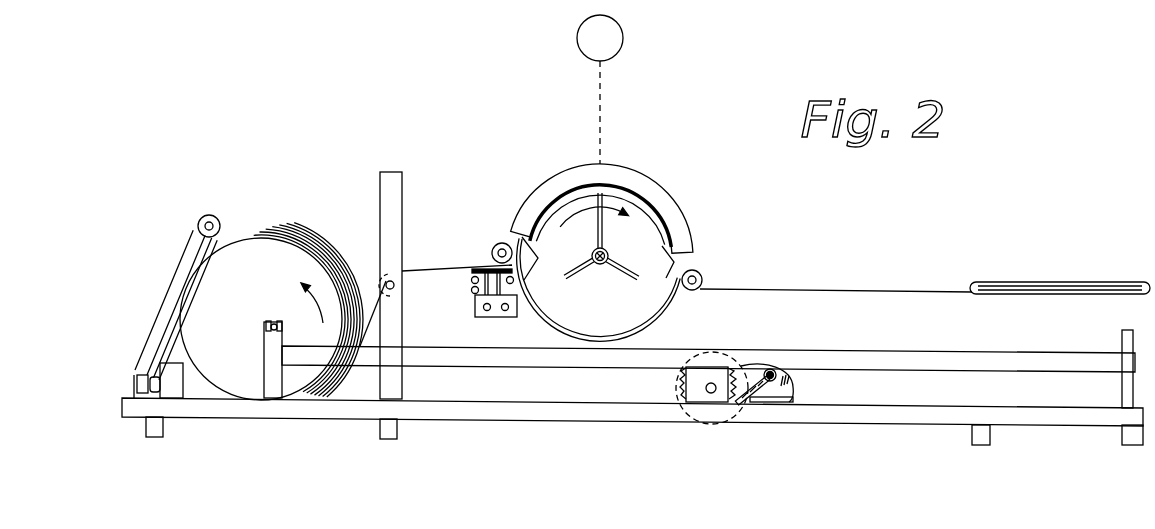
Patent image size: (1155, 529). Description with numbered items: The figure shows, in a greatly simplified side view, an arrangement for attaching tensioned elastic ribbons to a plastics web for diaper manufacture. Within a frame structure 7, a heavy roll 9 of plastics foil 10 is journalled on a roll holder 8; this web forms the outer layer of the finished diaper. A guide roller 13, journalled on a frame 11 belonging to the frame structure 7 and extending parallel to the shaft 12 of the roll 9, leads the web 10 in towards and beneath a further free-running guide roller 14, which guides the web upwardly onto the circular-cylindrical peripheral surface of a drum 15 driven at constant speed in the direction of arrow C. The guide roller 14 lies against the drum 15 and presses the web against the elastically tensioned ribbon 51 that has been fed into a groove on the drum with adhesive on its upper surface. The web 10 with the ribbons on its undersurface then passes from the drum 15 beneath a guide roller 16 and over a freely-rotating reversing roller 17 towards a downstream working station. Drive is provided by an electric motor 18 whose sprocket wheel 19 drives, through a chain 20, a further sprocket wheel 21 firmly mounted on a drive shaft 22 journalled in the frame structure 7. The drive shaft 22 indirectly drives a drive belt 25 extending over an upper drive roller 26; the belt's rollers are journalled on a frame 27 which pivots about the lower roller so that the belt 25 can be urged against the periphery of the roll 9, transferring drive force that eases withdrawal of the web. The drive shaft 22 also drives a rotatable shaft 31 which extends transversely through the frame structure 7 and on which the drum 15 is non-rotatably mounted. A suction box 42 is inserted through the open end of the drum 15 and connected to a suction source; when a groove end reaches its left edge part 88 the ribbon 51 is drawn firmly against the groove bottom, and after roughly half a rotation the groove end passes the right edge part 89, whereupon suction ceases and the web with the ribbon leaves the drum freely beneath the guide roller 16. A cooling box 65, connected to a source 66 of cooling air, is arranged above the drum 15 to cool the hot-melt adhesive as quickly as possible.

The frame structure 7 is at (889, 421).
The roll holder 8 is at (272, 393).
The roll 9 is at (311, 258).
The plastics foil 10 is at (450, 268).
The frame 11 is at (398, 184).
The shaft 12 is at (268, 330).
The guide roller 13 is at (381, 278).
The guide roller 14 is at (501, 242).
The drum 15 is at (657, 236).
The guide roller 16 is at (701, 277).
The reversing roller 17 is at (976, 282).
The electric motor 18 is at (796, 382).
The sprocket wheel 19 is at (774, 382).
The chain 20 is at (768, 384).
The sprocket wheel 21 is at (683, 398).
The drive shaft 22 is at (711, 396).
The drive belt 25 is at (174, 281).
The upper drive roller 26 is at (219, 228).
The frame 27 is at (199, 245).
The rotatable shaft 31 is at (591, 253).
The suction box 42 is at (529, 295).
The elastic ribbon 51 is at (477, 281).
The cooling box 65 is at (629, 164).
The source of cooling air 66 is at (623, 38).
The left edge part 88 is at (525, 298).
The right edge part 89 is at (668, 262).